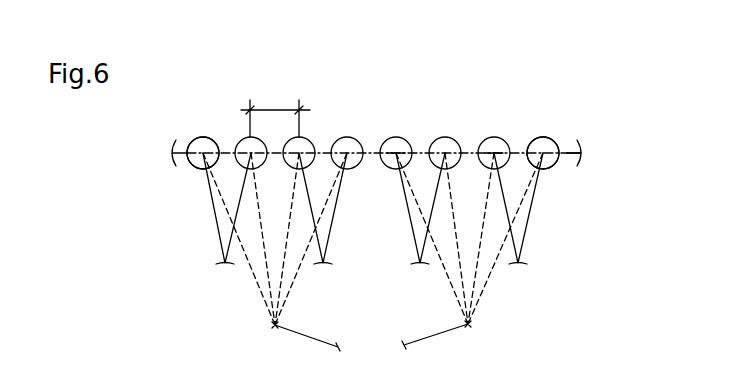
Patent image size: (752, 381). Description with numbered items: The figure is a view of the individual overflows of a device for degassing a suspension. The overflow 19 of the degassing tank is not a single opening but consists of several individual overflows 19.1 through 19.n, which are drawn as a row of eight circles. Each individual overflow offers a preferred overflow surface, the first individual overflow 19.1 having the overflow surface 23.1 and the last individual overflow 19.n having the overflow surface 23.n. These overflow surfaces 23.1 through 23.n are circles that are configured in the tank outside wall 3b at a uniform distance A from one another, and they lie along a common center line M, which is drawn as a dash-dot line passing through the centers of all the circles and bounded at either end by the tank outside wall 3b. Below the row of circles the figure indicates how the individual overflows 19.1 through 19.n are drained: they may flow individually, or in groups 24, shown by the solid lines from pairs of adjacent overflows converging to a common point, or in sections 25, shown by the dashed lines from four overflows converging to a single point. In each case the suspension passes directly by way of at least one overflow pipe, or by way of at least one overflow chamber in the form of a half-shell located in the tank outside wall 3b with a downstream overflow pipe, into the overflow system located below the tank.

The overflow 19 is at (376, 112).
The tank outside wall 3b is at (478, 116).
The individual overflow 19.n is at (203, 137).
The overflow surface 23.n is at (223, 112).
The individual overflow 19.1 is at (543, 137).
The overflow surface 23.1 is at (576, 107).
The group 24 is at (213, 205).
The section 25 is at (258, 287).
The distance A is at (275, 112).
The center line M is at (572, 162).